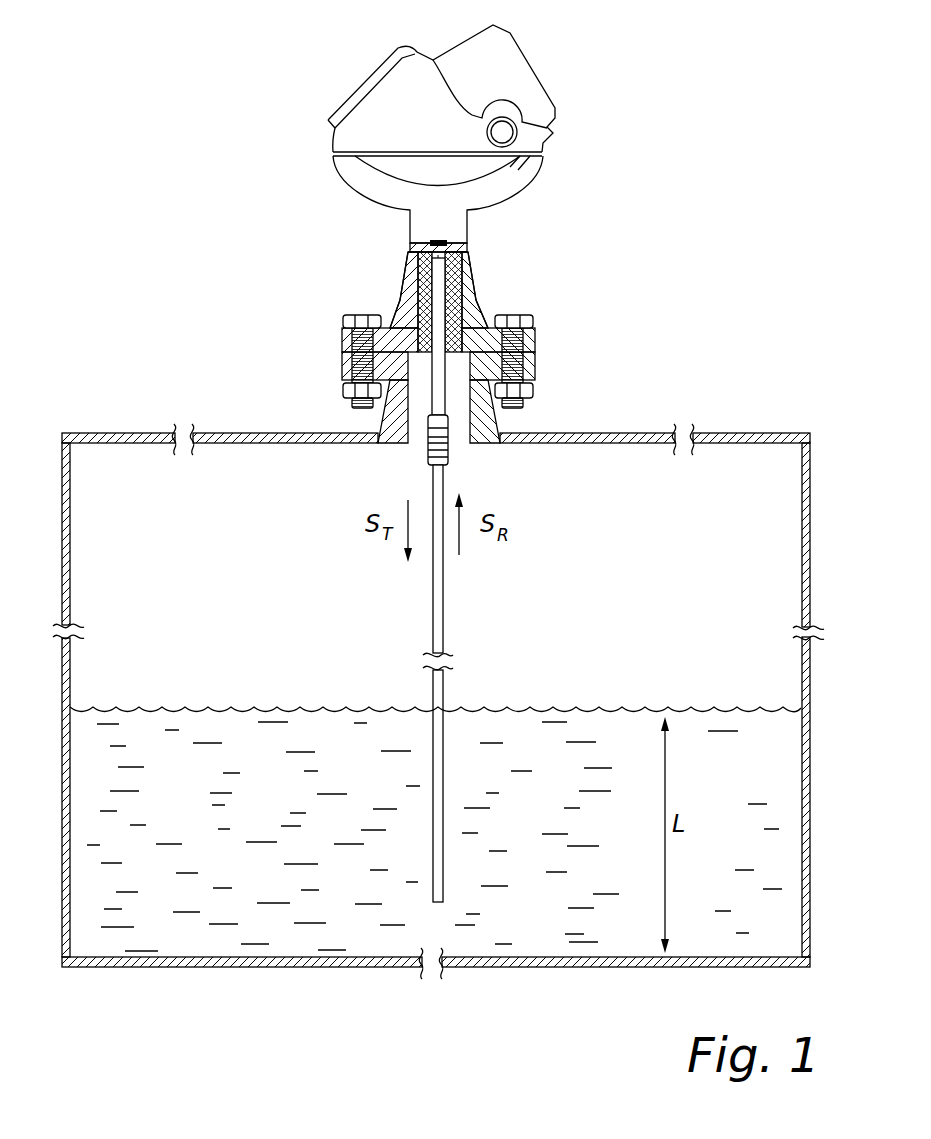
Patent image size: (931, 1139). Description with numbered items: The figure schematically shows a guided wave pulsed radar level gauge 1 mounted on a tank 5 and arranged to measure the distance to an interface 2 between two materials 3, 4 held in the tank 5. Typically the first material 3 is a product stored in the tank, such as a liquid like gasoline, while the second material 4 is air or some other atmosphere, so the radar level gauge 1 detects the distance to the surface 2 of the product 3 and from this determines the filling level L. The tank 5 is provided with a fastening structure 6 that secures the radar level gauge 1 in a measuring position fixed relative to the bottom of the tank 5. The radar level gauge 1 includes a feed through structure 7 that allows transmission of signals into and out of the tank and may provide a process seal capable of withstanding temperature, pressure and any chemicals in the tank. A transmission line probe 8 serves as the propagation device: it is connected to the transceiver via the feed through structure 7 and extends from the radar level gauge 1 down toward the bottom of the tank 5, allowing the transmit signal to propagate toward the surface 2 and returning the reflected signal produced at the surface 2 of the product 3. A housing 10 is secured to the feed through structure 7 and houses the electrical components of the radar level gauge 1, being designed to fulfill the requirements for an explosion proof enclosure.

The guided wave pulsed radar level gauge 1 is at (283, 129).
The interface 2 is at (203, 706).
The first material 3 is at (281, 848).
The second material 4 is at (285, 577).
The tank 5 is at (602, 433).
The fastening structure 6 is at (500, 425).
The feed through structure 7 is at (480, 310).
The transmission line probe 8 is at (445, 585).
The housing 10 is at (357, 190).